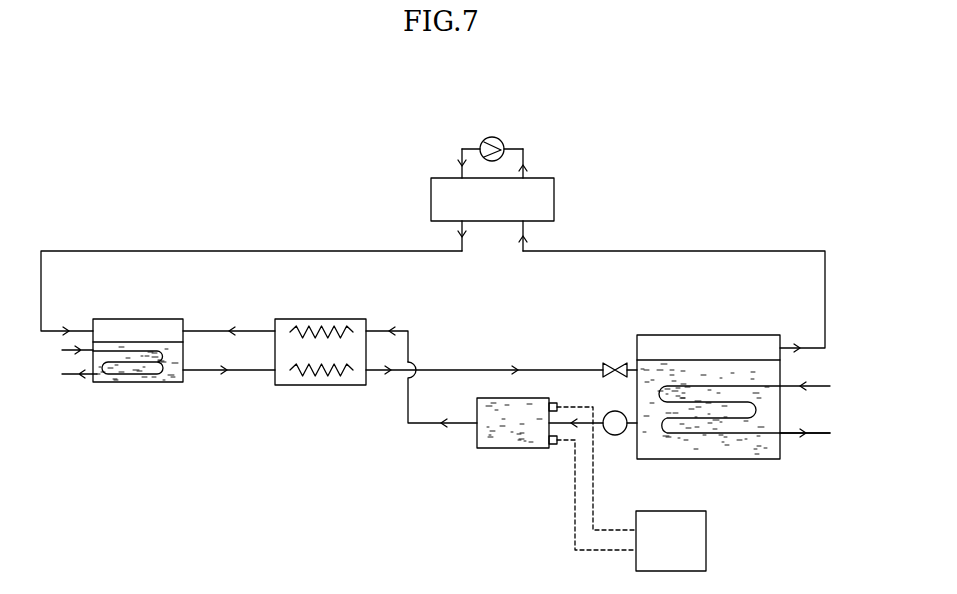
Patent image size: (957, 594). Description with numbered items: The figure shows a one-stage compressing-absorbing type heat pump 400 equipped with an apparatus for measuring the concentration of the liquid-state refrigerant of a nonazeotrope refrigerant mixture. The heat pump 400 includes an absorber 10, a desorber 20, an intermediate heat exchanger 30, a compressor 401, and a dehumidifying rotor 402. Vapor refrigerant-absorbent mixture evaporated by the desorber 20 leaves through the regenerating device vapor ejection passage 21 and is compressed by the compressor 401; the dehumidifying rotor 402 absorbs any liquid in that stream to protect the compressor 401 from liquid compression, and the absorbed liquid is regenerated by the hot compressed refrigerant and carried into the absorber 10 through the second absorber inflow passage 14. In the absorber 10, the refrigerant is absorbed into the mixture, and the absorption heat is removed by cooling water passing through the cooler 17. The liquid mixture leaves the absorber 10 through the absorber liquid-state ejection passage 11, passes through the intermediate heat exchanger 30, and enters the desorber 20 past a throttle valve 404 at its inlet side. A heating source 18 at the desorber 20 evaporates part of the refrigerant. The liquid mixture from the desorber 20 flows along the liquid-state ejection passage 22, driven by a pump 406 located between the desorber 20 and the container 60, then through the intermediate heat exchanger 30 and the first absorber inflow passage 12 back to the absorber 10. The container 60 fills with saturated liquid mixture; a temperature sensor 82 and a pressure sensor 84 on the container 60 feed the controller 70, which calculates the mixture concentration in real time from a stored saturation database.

The 1-stage compressing-absorbing type heat pump 400 is at (657, 92).
The compressor 401 is at (501, 141).
The dehumidifying rotor 402 is at (554, 196).
The absorber 10 is at (165, 319).
The absorber liquid-state ejection passage 11 is at (207, 374).
The first absorber inflow passage 12 is at (220, 331).
The second absorber inflow passage 14 is at (55, 331).
The cooler 17 is at (108, 378).
The heating source 18 is at (818, 438).
The desorber 20 is at (763, 335).
The regenerating device vapor ejection passage 21 is at (825, 336).
The regenerating device liquid-state ejection passage 22 is at (425, 426).
The intermediate heat exchanger 30 is at (350, 319).
The container 60 is at (492, 448).
The controller 70 is at (706, 540).
The temperature sensor 82 is at (558, 402).
The pressure sensor 84 is at (553, 448).
The throttle valve 404 is at (612, 362).
The pump 406 is at (615, 411).